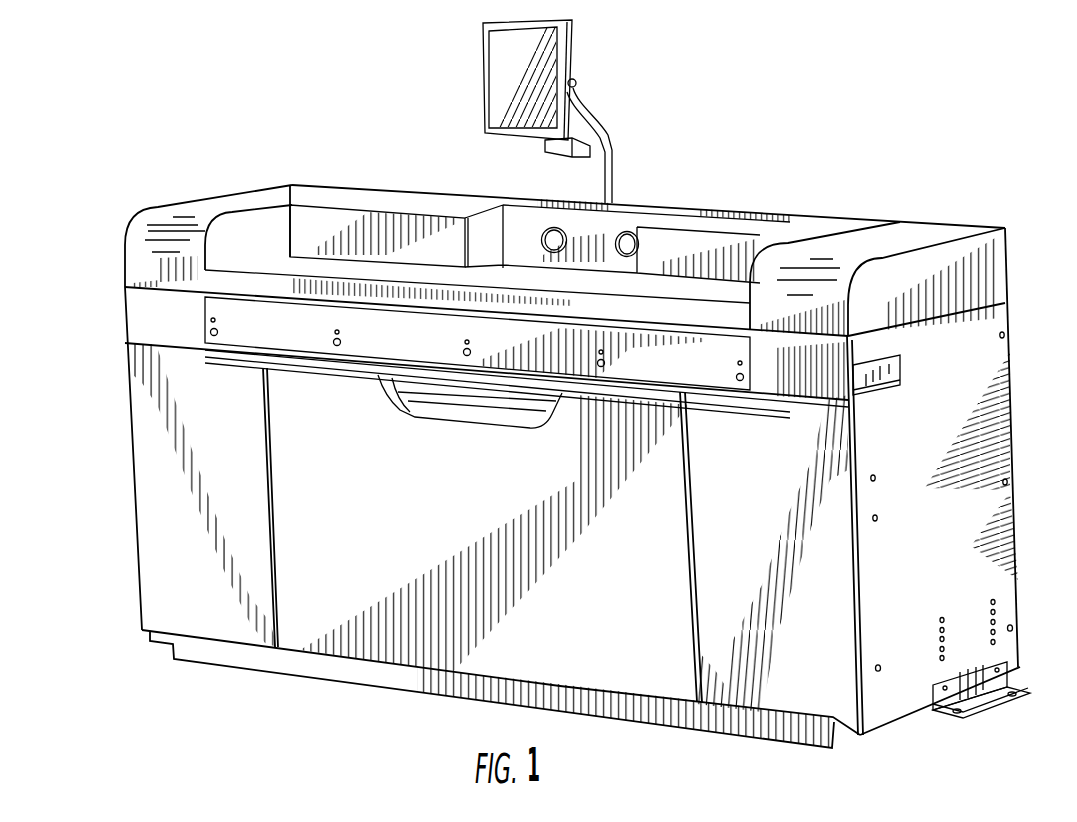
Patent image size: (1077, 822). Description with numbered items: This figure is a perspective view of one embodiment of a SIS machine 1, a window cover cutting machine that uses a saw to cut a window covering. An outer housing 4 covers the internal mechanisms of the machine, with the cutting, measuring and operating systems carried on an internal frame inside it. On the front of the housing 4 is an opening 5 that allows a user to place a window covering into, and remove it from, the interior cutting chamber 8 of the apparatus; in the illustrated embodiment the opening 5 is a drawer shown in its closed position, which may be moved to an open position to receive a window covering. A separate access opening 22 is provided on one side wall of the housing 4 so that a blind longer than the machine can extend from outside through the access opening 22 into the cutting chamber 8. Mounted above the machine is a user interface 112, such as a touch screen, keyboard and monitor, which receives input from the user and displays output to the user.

The SIS machine 1 is at (1012, 218).
The outer housing 4 is at (838, 680).
The opening 5 is at (750, 363).
The interior cutting chamber 8 is at (580, 284).
The access opening 22 is at (888, 388).
The user interface 112 is at (498, 78).